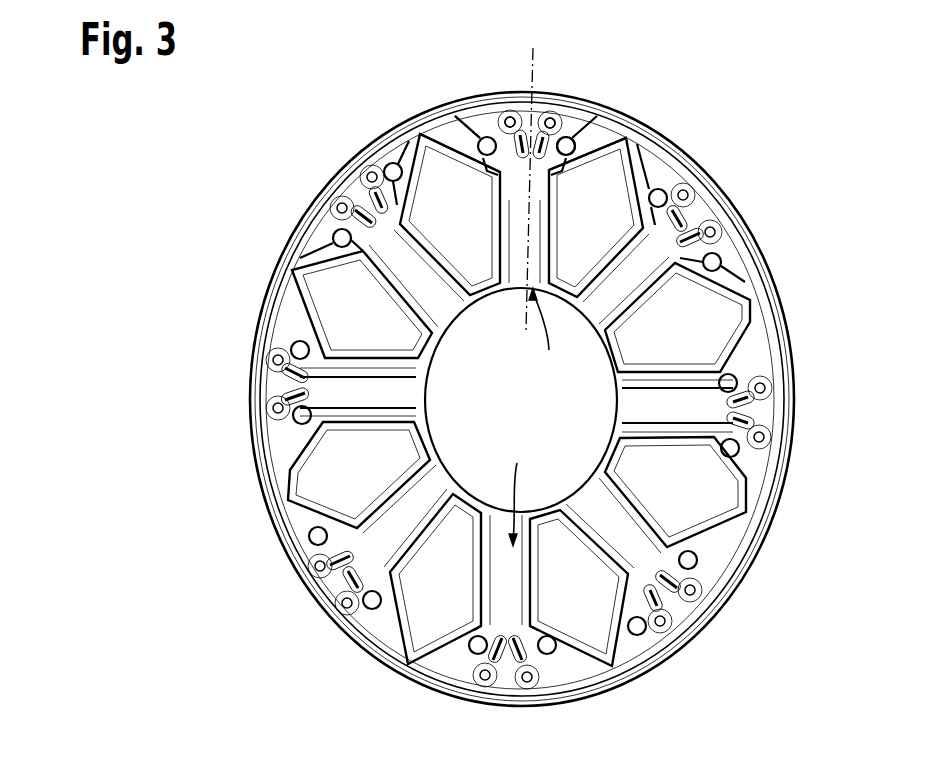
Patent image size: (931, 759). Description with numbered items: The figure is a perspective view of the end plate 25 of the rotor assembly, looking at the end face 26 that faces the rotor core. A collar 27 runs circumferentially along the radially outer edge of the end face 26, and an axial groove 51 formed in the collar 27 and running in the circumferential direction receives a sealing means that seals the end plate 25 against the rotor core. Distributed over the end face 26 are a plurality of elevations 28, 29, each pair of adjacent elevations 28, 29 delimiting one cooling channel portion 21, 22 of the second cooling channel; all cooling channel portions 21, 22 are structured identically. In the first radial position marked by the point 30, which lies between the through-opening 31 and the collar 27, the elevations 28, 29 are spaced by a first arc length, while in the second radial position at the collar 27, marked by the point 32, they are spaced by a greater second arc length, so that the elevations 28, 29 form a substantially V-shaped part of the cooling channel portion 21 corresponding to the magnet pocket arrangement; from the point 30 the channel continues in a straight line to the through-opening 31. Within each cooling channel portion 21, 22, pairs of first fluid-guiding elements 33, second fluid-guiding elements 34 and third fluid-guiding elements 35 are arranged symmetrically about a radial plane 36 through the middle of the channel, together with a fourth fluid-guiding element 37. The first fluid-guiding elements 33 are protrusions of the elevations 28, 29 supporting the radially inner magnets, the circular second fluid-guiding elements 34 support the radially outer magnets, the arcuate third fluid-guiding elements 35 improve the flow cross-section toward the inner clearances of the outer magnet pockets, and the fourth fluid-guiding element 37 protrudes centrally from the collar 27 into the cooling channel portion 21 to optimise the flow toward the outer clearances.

The cooling channel portion 21 is at (546, 338).
The cooling channel portion 22 is at (521, 490).
The end plate 25 is at (706, 152).
The end face 26 is at (288, 272).
The collar 27 is at (452, 128).
The elevation 28 is at (435, 135).
The elevation 29 is at (637, 148).
The point 30 is at (532, 183).
The through-opening 31 is at (491, 432).
The point 32 is at (551, 120).
The first fluid-guiding element 33 is at (614, 142).
The second fluid-guiding element 34 is at (512, 118).
The third fluid-guiding element 35 is at (570, 138).
The plane 36 is at (518, 325).
The fourth fluid-guiding element 37 is at (530, 122).
The axial groove 51 is at (333, 177).